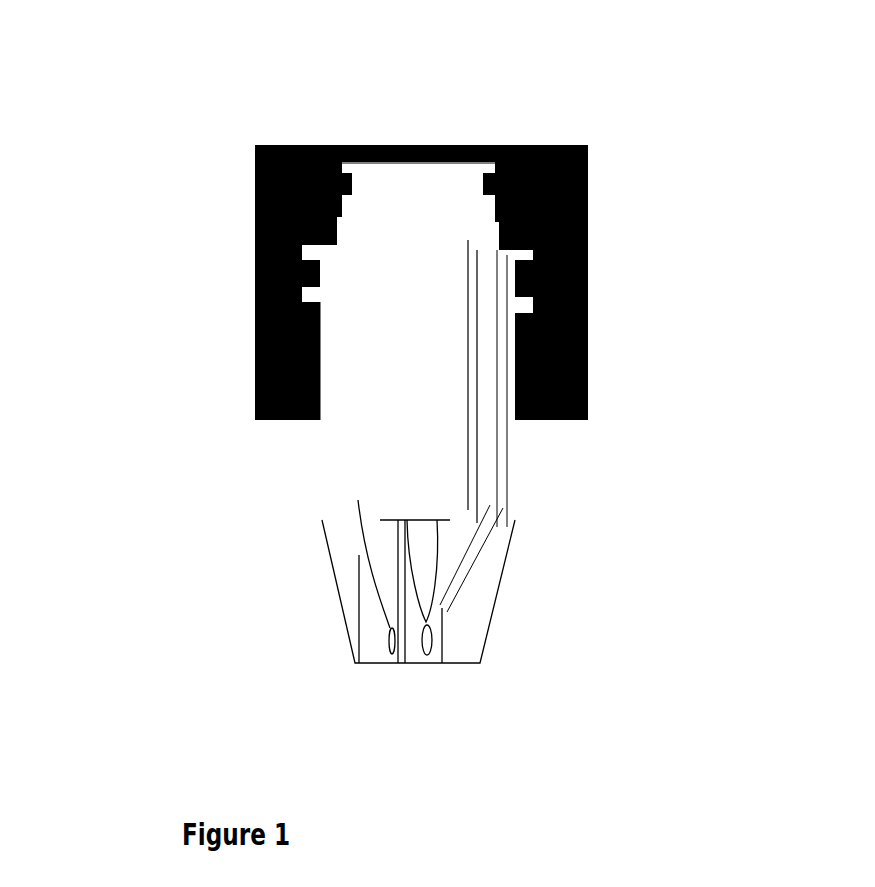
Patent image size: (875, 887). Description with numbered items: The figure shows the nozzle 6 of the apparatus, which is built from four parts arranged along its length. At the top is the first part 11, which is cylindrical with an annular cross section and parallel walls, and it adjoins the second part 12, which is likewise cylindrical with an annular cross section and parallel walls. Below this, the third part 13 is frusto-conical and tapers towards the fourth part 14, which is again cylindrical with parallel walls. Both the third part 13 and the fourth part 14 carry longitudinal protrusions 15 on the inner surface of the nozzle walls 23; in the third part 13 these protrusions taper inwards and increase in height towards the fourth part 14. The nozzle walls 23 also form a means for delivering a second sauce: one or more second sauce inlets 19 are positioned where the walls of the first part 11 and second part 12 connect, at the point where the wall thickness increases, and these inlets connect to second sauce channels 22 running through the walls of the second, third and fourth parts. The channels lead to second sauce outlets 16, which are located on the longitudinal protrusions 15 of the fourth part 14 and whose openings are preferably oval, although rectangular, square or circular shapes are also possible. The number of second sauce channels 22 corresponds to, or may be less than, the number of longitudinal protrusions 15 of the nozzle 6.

The nozzle 6 is at (699, 126).
The first part 11 is at (427, 196).
The second part 12 is at (448, 291).
The third part 13 is at (433, 560).
The fourth part 14 is at (369, 648).
The longitudinal protrusions 15 is at (380, 551).
The second sauce outlets 16 is at (431, 642).
The second sauce inlets 19 is at (500, 247).
The second sauce channels 22 is at (502, 457).
The nozzle walls 23 is at (337, 332).